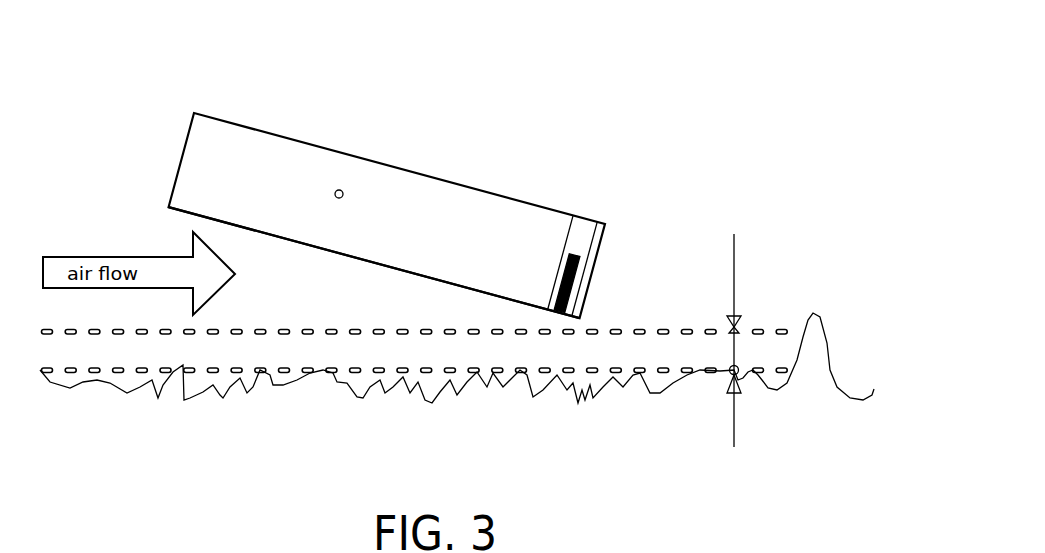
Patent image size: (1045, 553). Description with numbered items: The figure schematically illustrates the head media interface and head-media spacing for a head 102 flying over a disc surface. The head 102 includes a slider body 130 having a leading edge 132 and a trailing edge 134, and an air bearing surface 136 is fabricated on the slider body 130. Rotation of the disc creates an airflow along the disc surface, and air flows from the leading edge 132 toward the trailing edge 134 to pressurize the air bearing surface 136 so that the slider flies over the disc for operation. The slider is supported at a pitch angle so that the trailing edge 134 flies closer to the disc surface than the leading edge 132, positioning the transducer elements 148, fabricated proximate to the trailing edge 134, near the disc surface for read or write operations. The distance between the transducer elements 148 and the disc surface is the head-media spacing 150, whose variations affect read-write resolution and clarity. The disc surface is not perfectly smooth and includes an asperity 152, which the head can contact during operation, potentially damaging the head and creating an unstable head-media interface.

The head 102 is at (336, 349).
The slider body 130 is at (337, 190).
The leading edge 132 is at (180, 160).
The trailing edge 134 is at (603, 245).
The air bearing surface 136 is at (285, 239).
The transducer elements 148 is at (579, 255).
The head-media spacing 150 is at (734, 234).
The asperity 152 is at (842, 347).